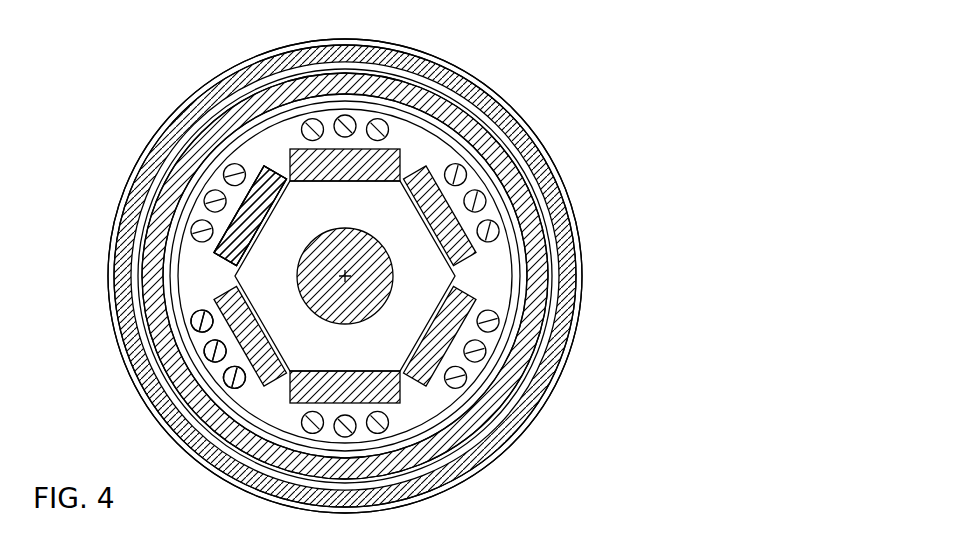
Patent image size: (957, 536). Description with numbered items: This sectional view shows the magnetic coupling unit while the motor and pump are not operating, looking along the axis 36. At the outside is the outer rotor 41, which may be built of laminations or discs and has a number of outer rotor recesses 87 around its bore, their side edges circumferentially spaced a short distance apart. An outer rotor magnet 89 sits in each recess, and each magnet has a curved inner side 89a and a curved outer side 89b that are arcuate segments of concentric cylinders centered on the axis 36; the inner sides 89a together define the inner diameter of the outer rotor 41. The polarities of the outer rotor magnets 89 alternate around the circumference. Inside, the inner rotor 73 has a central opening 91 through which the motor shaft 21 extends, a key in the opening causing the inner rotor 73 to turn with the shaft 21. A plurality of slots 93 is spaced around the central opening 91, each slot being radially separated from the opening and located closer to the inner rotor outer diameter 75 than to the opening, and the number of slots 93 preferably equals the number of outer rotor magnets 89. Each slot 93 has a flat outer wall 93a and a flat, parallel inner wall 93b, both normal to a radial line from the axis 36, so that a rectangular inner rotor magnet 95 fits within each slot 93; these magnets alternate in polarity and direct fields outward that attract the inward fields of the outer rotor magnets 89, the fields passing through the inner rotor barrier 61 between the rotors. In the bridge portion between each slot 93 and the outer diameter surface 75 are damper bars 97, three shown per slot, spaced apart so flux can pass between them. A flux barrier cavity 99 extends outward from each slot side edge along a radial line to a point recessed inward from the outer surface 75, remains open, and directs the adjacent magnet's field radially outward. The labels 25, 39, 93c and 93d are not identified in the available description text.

The bearing assembly 25 is at (620, 218).
The curved inner side 89a is at (300, 40).
The curved outer side 89b is at (378, 38).
The outer rotor magnet 89 is at (486, 78).
The outer rotor recess 87 is at (503, 114).
The housing ring 39 is at (554, 297).
The central opening 91 is at (543, 358).
The outer rotor 41 is at (517, 380).
The inner rotor barrier 61 is at (488, 393).
The motor shaft 21 is at (452, 464).
The axis 36 is at (395, 235).
The inner rotor 73 is at (350, 300).
The outer wall 93a is at (230, 212).
The inner wall 93b is at (288, 208).
The block segment 93c is at (222, 110).
The block segment 93d is at (228, 246).
The slot 93 is at (215, 276).
The damper bar 97 is at (220, 166).
The flux barrier cavity 99 is at (193, 298).
The inner rotor magnet 95 is at (226, 338).
The inner rotor outer diameter 75 is at (263, 445).